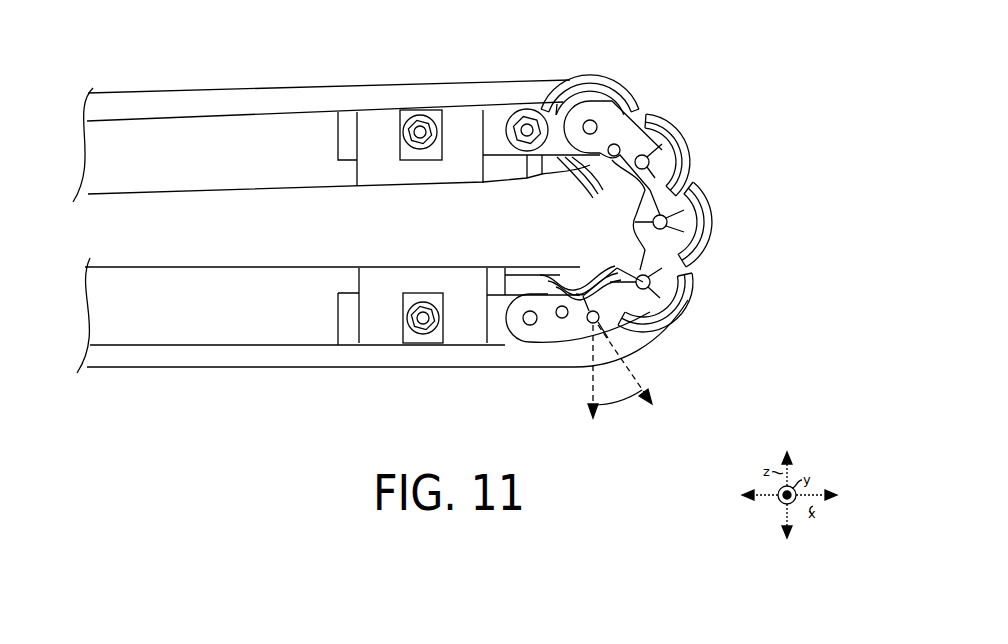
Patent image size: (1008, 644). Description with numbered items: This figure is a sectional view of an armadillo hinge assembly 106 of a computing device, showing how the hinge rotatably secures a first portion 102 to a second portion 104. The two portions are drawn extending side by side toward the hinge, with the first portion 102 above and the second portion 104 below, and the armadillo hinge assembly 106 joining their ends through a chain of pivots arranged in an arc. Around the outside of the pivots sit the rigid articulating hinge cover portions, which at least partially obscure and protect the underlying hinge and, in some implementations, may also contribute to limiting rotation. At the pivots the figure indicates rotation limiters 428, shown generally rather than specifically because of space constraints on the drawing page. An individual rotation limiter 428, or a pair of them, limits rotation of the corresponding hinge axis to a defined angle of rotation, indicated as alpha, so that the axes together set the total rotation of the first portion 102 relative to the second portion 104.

The first portion 102 is at (225, 178).
The second portion 104 is at (217, 329).
The armadillo hinge assembly 106 is at (590, 217).
The rotation limiter 428 is at (633, 229).